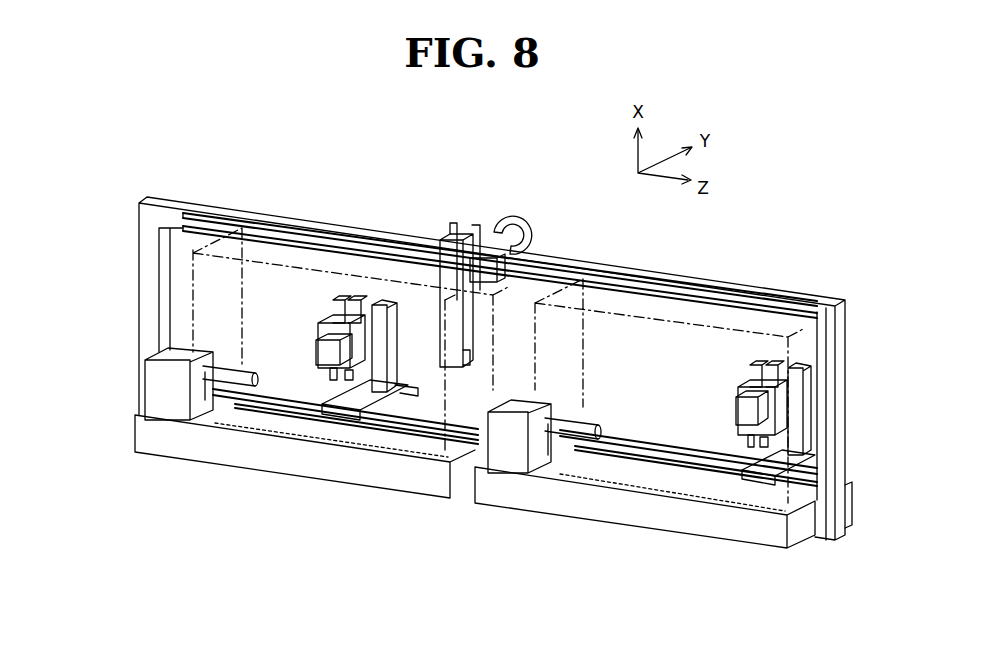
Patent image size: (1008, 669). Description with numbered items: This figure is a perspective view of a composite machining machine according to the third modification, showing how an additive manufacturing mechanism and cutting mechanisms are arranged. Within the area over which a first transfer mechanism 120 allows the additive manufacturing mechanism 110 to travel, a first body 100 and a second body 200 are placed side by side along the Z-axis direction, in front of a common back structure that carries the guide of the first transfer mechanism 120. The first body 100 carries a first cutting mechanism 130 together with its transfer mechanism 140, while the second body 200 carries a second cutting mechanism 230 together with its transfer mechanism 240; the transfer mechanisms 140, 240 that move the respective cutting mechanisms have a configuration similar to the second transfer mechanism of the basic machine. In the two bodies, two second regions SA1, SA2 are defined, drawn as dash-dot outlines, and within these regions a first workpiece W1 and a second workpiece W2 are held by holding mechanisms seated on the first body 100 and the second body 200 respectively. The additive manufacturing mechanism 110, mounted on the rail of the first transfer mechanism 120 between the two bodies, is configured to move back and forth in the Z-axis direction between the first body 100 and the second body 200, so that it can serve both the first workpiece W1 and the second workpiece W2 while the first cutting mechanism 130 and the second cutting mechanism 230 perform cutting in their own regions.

The first body 100 is at (278, 494).
The second body 200 is at (619, 547).
The additive manufacturing mechanism 110 is at (487, 354).
The first transfer mechanism 120 is at (303, 198).
The first cutting mechanism 130 is at (297, 355).
The transfer mechanism 140 is at (396, 291).
The second cutting mechanism 230 is at (727, 423).
The transfer mechanism 240 is at (728, 378).
The first workpiece W1 is at (206, 410).
The second workpiece W2 is at (545, 460).
The second region SA1 is at (322, 270).
The second region SA2 is at (705, 330).